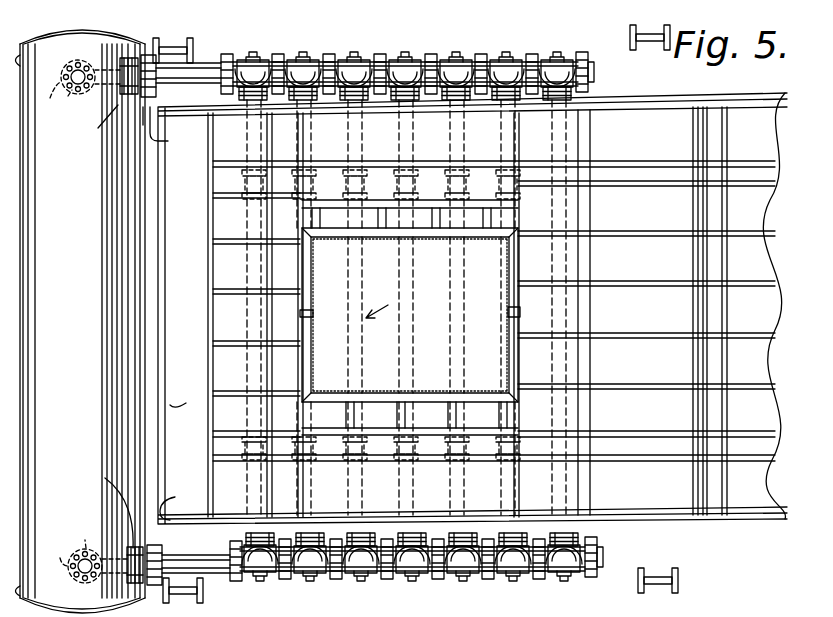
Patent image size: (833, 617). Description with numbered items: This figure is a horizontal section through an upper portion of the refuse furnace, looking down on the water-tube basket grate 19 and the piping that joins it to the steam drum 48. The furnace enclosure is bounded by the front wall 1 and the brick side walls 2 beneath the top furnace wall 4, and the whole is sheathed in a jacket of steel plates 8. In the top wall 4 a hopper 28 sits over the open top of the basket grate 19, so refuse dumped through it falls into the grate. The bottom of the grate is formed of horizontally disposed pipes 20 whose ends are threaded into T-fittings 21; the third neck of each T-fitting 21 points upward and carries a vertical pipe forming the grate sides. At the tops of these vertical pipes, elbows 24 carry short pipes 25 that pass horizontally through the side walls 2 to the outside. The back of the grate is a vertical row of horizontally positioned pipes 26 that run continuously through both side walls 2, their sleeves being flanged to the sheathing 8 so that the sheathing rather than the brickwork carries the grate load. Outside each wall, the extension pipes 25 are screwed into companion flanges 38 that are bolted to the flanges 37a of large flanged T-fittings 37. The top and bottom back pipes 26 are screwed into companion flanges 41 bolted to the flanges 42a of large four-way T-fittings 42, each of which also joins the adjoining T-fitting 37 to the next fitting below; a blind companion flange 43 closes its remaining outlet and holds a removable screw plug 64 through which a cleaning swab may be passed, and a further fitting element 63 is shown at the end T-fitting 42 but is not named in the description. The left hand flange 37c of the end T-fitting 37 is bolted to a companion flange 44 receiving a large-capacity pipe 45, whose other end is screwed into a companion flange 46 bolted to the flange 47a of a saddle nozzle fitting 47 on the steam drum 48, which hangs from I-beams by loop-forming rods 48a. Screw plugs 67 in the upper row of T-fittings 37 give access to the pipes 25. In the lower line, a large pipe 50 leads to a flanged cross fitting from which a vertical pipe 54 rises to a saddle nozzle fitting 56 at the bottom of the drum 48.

The front wall 1 is at (183, 395).
The side walls 2 is at (635, 143).
The top furnace wall 4 is at (494, 311).
The jacket of steel plates 8 is at (165, 205).
The basket grate 19 is at (382, 302).
The horizontally disposed pipes 20 is at (400, 326).
The T-fittings 21 is at (300, 205).
The elbows 24 is at (302, 172).
The short pipes 25 is at (297, 150).
The horizontally positioned pipes 26 is at (574, 320).
The hopper 28 is at (520, 268).
The large flanged T-fittings 37 is at (286, 62).
The flange 37a is at (247, 92).
The left hand flange 37c is at (238, 58).
The companion flange 38 is at (252, 102).
The companion flanges 41 is at (576, 100).
The four-way T-fittings 42 is at (566, 58).
The flanges 42a is at (580, 92).
The blind companion flange 43 is at (586, 52).
The companion flange 44 is at (225, 60).
The pipe 45 is at (183, 85).
The companion flange 46 is at (152, 92).
The saddle nozzle fitting 47 is at (106, 326).
The flange 47a is at (160, 134).
The steam drum 48 is at (82, 321).
The loop-forming rods 48a is at (20, 63).
The pipe 50 is at (88, 88).
The vertical pipe 54 is at (74, 319).
The saddle nozzle fitting 56 is at (54, 324).
The end cap 63 is at (559, 50).
The screw plug 64 is at (595, 65).
The screw plugs 67 is at (253, 52).